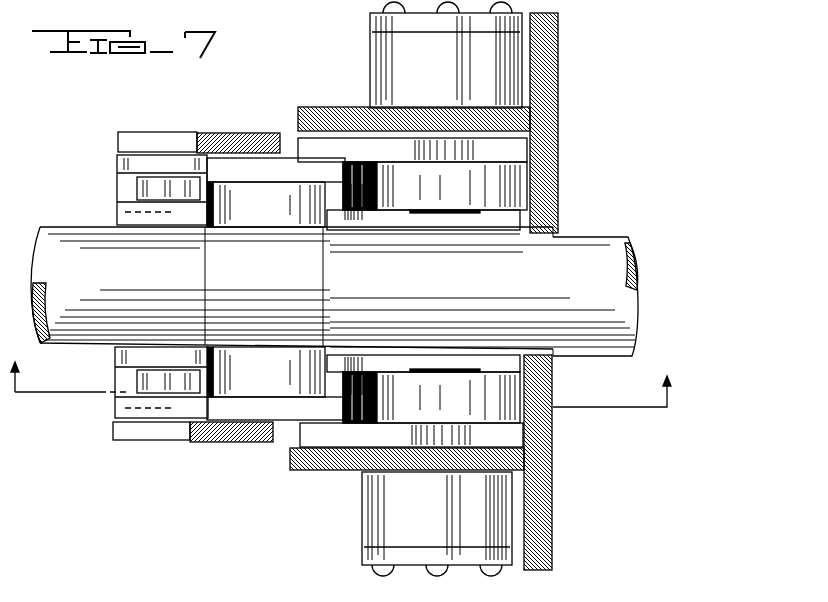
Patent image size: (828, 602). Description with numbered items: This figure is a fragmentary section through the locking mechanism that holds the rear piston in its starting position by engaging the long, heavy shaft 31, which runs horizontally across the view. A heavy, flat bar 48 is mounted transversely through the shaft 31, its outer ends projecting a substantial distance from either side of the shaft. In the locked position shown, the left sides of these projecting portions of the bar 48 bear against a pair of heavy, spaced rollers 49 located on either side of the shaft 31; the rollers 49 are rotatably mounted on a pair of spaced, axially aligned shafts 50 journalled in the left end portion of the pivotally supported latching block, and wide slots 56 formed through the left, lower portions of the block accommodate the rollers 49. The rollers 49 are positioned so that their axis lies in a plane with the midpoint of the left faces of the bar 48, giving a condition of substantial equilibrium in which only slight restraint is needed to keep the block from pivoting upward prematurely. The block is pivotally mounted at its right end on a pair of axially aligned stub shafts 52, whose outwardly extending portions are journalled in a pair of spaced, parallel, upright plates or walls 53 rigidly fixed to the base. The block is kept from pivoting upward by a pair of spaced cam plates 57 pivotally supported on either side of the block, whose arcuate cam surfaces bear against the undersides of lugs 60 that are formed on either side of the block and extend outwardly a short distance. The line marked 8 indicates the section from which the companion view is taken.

The section line 8- 8 is at (341, 391).
The shaft 31 is at (334, 291).
The bar 48 is at (261, 190).
The rollers 49 is at (138, 192).
The shafts 50 is at (117, 210).
The stub shafts 52 is at (475, 150).
The upright plates or walls 53 is at (335, 108).
The slots 56 is at (117, 166).
The cam plates 57 is at (120, 143).
The lugs 60 is at (212, 133).